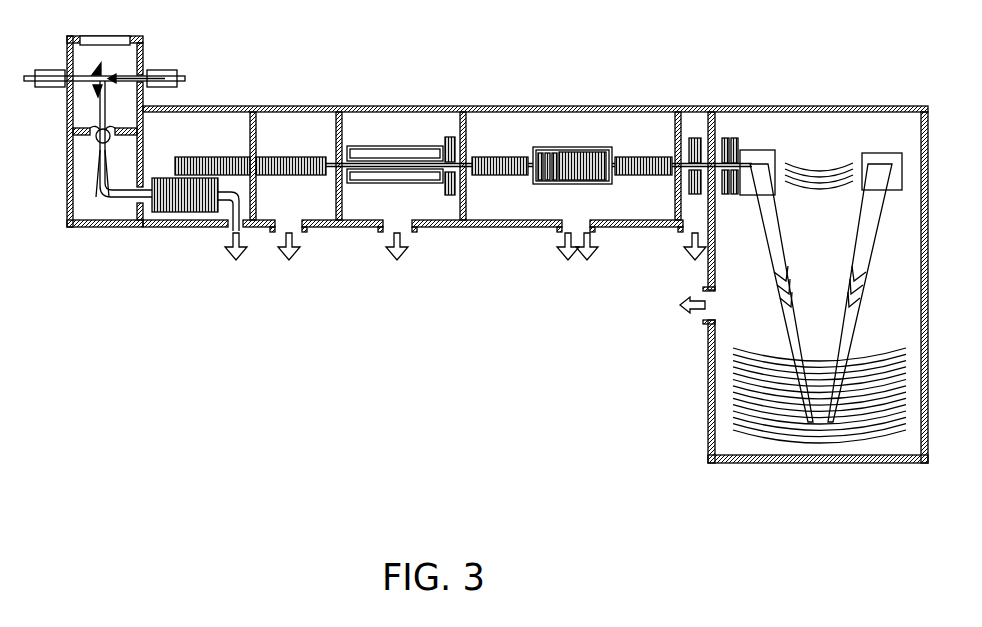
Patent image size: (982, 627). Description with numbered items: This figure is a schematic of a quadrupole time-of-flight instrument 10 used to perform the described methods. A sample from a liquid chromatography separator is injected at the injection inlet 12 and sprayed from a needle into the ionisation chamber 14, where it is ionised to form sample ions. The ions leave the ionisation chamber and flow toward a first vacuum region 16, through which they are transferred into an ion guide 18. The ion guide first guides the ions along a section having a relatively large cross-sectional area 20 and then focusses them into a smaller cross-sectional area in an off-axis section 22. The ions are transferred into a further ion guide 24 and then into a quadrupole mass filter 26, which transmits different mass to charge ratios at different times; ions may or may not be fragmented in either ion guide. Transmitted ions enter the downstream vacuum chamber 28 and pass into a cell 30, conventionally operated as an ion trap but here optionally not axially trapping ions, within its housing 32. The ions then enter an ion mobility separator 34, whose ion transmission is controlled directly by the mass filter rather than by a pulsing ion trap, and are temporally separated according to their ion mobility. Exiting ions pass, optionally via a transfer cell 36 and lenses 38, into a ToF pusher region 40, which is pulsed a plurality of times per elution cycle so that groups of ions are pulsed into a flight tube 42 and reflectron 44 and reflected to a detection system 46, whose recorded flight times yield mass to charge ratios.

The housing 10 is at (462, 222).
The injection inlet 12 is at (45, 88).
The ionisation chamber 14 is at (100, 88).
The first vacuum region 16 is at (97, 185).
The ion guide 18 is at (170, 177).
The section having a relatively large cross-sectional area 20 is at (197, 212).
The off-axis section 22 is at (228, 156).
The further ion guide 24 is at (290, 155).
The quadrupole mass filter 26 is at (393, 148).
The downstream vacuum chamber 28 is at (555, 207).
The cell 30 is at (505, 155).
The coil housing 32 is at (533, 183).
The ion mobility separator 34 is at (578, 152).
The transfer cell 36 is at (647, 175).
The lenses 38 is at (693, 137).
The ToF pusher region 40 is at (760, 160).
The flight tube 42 is at (773, 273).
The reflectron 44 is at (743, 417).
The detection system 46 is at (883, 165).